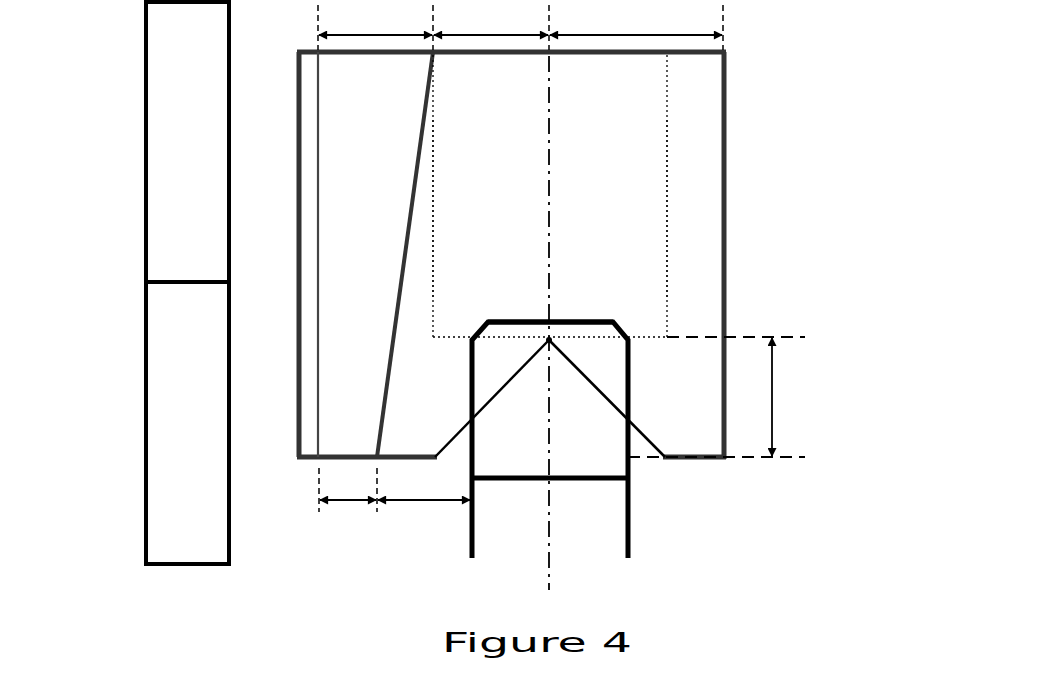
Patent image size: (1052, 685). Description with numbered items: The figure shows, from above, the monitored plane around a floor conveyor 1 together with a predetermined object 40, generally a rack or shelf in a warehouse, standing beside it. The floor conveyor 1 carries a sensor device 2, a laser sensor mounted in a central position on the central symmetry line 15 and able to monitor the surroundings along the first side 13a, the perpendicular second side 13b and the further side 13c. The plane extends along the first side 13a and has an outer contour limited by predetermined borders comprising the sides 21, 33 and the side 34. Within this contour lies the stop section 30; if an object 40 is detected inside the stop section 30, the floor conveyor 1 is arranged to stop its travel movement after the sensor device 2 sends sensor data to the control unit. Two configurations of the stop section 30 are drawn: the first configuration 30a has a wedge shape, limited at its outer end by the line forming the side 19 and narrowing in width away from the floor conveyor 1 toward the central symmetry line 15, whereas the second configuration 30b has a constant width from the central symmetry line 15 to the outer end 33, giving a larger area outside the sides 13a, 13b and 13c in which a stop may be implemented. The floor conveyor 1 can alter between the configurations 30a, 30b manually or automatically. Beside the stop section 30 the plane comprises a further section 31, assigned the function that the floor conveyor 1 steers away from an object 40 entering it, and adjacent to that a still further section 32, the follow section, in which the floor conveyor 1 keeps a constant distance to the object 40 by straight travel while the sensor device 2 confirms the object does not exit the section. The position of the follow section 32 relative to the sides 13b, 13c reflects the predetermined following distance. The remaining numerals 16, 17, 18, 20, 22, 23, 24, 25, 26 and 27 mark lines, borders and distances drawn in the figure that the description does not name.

The floor conveyor 1 is at (608, 452).
The sensor device 2 is at (553, 340).
The first side 13a is at (558, 322).
The second side 13b is at (467, 400).
The side 13c is at (632, 378).
The central symmetry line 15 is at (548, 537).
The top face of layer 16 is at (663, 173).
The upper reference line 17 is at (700, 337).
The lower reference line 18 is at (805, 457).
The side 19 is at (382, 410).
The inner layer line 20 is at (320, 190).
The side 21 is at (298, 440).
The distance 22 is at (424, 525).
The distance 23 is at (491, 17).
The height 24 is at (796, 397).
The distance 25 is at (636, 17).
The distance 26 is at (348, 521).
The distance 27 is at (375, 17).
The stop section 30 is at (549, 323).
The first configuration 30a is at (479, 210).
The second configuration 30b is at (624, 210).
The further section 31 is at (355, 284).
The still further section 32 is at (306, 120).
The side 33 is at (724, 223).
The side 34 is at (510, 57).
The object 40 is at (231, 238).